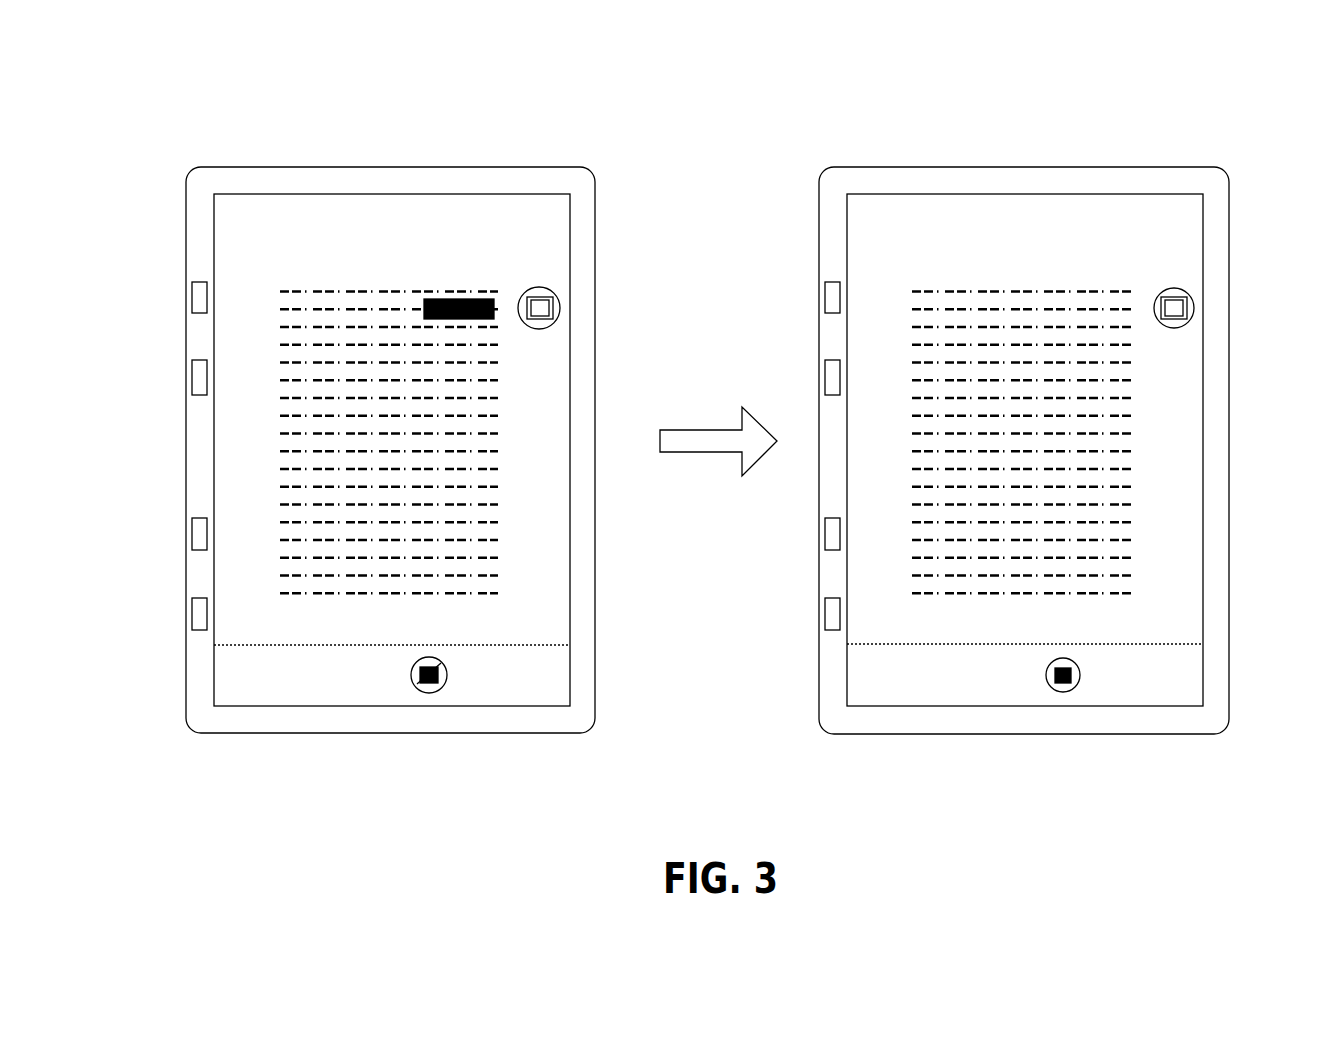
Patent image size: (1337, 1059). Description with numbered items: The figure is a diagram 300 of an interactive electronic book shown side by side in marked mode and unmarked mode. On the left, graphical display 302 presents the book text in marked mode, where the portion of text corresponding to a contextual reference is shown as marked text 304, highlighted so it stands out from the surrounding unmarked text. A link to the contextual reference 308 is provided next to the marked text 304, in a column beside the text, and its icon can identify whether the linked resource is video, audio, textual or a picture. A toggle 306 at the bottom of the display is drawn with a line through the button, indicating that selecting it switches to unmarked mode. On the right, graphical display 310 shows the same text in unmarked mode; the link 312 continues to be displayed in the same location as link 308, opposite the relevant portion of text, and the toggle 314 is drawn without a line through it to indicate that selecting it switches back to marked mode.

The diagram 300 is at (250, 90).
The graphical display 302 is at (449, 186).
The marked text 304 is at (456, 290).
The toggle 306 is at (429, 703).
The link to contextual reference 308 is at (564, 282).
The graphical display 310 is at (1082, 186).
The link to contextual reference 312 is at (1200, 280).
The toggle 314 is at (1063, 703).